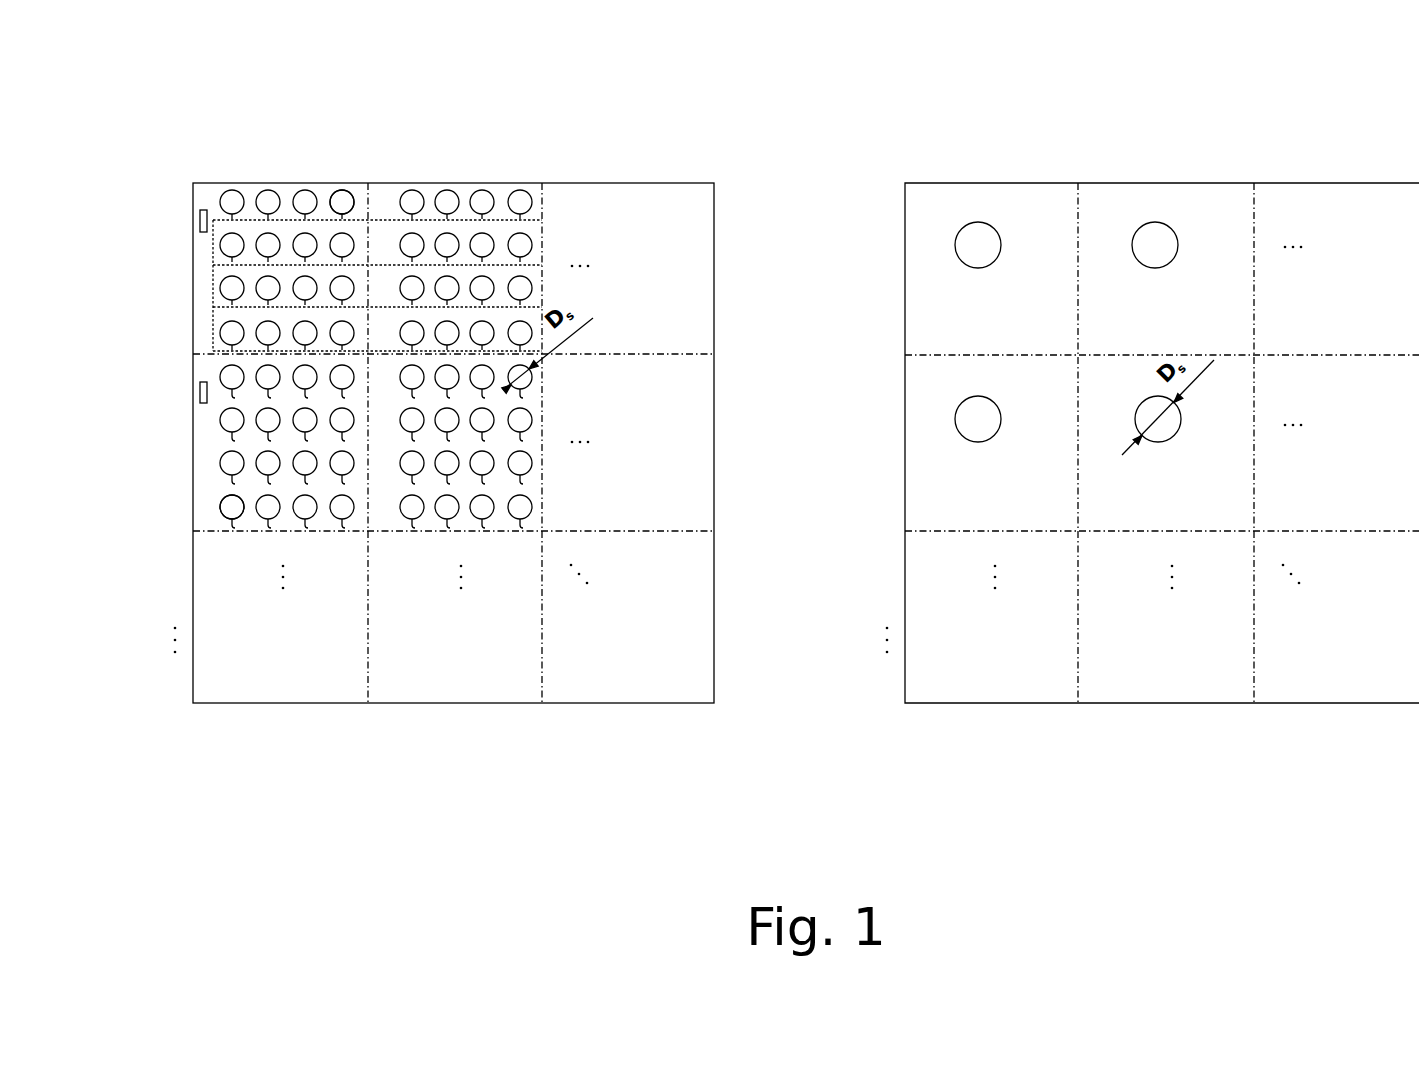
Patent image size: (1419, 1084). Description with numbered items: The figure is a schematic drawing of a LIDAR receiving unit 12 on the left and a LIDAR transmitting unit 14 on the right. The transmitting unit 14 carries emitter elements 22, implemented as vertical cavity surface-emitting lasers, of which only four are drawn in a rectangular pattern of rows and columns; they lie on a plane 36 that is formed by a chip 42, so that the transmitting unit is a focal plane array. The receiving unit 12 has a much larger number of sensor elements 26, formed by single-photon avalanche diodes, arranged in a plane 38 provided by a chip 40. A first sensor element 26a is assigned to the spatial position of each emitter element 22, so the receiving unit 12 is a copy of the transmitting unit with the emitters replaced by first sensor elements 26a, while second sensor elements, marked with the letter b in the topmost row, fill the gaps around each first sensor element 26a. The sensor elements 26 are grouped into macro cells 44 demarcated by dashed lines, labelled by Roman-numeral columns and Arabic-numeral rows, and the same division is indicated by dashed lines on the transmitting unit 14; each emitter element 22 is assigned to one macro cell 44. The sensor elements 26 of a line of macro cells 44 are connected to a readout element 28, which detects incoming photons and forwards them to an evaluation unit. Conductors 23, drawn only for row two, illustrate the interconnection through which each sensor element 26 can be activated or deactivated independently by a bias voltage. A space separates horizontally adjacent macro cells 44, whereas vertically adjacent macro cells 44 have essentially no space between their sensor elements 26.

The LIDAR receiving unit 12 is at (654, 723).
The LIDAR transmitting unit 14 is at (984, 718).
The emitter element 22 is at (1139, 228).
The conductor 23 is at (534, 538).
The sensor element 26 is at (342, 190).
The first sensor element 26a is at (259, 236).
The readout element 28 is at (203, 208).
The plane 36 is at (1339, 673).
The plane 38 is at (604, 676).
The chip 40 is at (684, 630).
The chip 42 is at (1387, 593).
The macro cell 44 is at (358, 188).